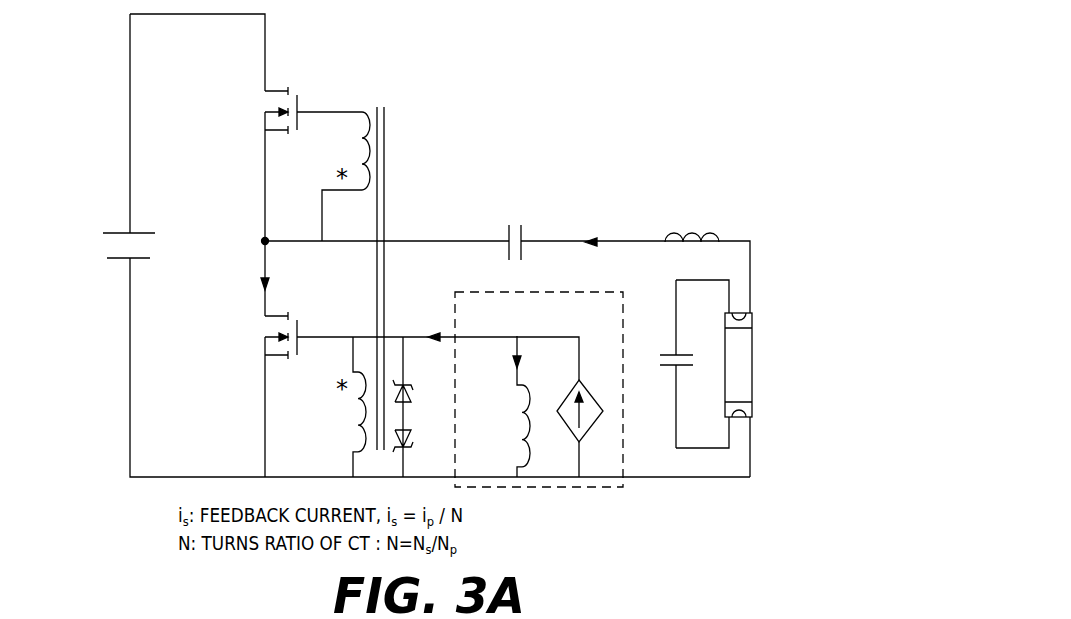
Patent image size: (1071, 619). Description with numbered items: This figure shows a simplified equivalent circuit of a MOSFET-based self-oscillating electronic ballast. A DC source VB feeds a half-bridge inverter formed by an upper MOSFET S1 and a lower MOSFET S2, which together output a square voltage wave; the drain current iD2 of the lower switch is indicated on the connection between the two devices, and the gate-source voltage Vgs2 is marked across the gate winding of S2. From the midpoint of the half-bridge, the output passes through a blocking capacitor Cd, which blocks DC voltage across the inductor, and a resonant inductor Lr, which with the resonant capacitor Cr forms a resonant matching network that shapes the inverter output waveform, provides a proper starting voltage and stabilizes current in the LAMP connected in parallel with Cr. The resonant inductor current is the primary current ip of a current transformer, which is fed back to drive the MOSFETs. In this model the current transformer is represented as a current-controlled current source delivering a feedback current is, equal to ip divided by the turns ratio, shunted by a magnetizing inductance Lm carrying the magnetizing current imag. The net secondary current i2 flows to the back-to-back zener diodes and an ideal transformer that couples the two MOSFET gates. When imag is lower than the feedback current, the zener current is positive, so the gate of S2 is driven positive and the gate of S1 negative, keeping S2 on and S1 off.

The DC bus voltage source VB is at (120, 224).
The first MOSFET switch S1 is at (256, 111).
The second MOSFET switch S2 is at (256, 336).
The drain current of S2 iD2 is at (211, 282).
The gate-source voltage of S2 Vgs2 is at (303, 405).
The blocking capacitor Cd is at (509, 225).
The resonant inductor Lr is at (692, 216).
The resonant capacitor Cr is at (686, 364).
The lamp LAMP is at (763, 365).
The magnetizing inductance Lm is at (501, 406).
The magnetizing current imag is at (484, 378).
The feedback current is is at (575, 397).
The primary current ip is at (592, 281).
The secondary current i2 is at (433, 305).